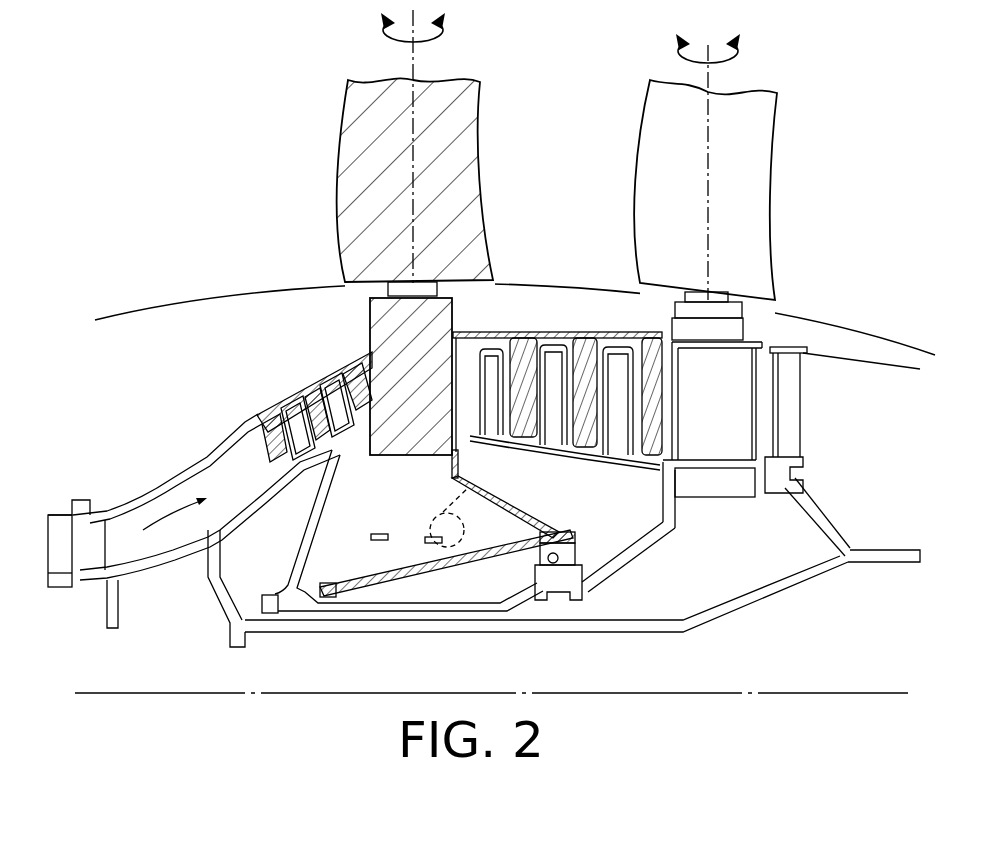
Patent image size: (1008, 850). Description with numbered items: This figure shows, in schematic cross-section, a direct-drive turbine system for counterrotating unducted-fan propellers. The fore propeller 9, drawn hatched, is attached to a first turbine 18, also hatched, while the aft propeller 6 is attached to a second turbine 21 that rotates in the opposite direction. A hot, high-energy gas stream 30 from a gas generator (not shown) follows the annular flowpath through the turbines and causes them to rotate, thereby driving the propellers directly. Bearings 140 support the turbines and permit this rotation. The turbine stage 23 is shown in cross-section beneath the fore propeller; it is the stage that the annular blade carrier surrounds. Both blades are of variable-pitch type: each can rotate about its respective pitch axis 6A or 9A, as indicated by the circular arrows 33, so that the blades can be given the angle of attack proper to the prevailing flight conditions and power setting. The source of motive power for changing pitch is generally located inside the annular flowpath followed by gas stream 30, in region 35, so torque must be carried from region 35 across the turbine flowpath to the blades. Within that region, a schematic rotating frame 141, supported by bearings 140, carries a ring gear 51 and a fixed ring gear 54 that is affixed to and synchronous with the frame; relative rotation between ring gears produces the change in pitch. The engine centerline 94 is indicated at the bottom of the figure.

The aft propeller 6 is at (756, 148).
The pitch axis 6A is at (712, 78).
The fore propeller 9 is at (465, 162).
The pitch axis 9A is at (411, 62).
The first turbine 18 is at (520, 340).
The second turbine 21 is at (553, 357).
The turbine stage 23 is at (405, 458).
The gas stream 30 is at (173, 522).
The circular arrows 33 is at (443, 36).
The region 35 is at (481, 484).
The ring gear 51 is at (379, 532).
The fixed ring gear 54 is at (432, 536).
The engine axis 94 is at (640, 693).
The bearings 140 is at (355, 600).
The rotating frame 141 is at (405, 572).